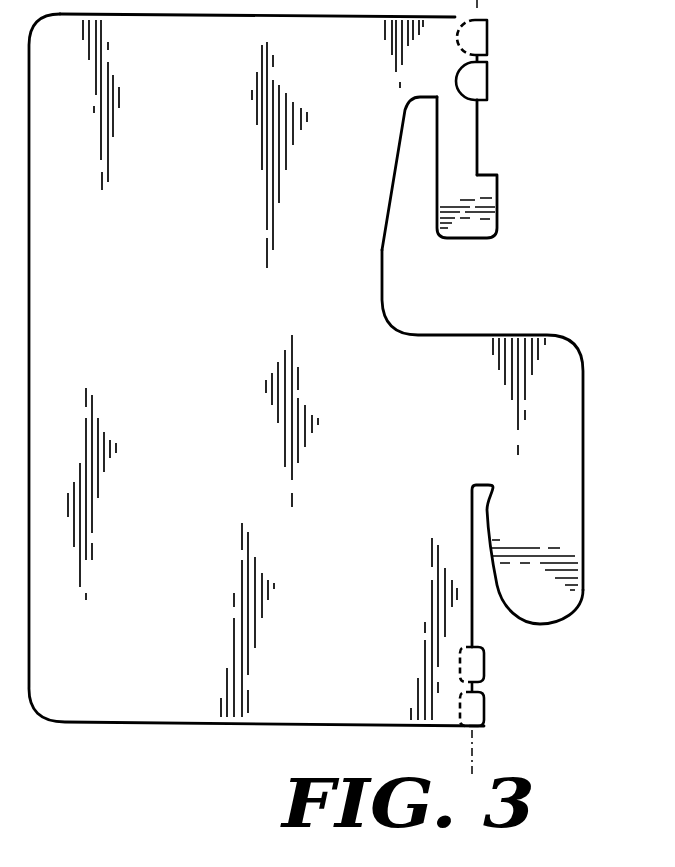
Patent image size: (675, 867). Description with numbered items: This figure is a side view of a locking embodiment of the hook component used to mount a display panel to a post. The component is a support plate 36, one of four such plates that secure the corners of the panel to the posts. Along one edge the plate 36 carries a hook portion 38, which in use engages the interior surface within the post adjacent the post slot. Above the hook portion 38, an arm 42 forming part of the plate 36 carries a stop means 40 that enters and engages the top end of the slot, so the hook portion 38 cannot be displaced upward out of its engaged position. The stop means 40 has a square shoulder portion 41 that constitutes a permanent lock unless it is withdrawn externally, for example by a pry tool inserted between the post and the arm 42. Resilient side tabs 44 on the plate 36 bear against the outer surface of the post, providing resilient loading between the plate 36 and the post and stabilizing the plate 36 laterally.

The support plate 36 is at (192, 724).
The hook portion 38 is at (545, 593).
The stop means 40 is at (477, 202).
The square shoulder portion 41 is at (488, 172).
The arm 42 is at (452, 177).
The resilient side tabs 44 is at (487, 40).